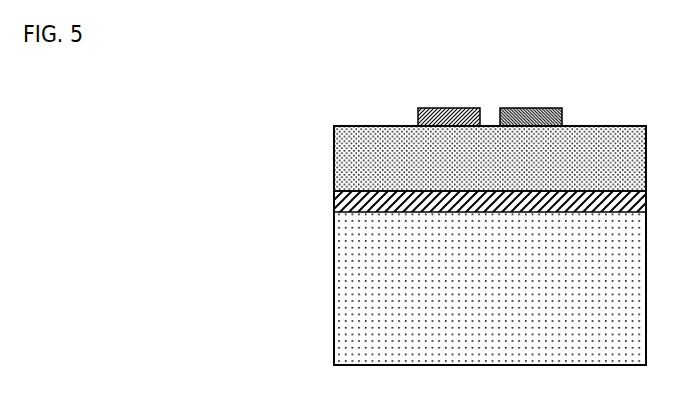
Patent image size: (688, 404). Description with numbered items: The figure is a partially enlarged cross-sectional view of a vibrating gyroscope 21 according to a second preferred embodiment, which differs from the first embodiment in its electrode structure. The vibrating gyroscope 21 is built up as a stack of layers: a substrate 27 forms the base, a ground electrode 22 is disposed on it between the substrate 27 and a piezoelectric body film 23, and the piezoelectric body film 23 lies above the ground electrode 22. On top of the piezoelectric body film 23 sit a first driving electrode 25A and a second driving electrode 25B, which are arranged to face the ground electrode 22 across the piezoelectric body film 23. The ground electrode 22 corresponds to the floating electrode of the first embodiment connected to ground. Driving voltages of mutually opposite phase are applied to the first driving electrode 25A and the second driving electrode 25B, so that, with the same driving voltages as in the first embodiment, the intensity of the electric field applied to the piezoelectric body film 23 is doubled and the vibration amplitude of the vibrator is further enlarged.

The vibrating gyroscope 21 is at (279, 100).
The ground electrode 22 is at (335, 201).
The piezoelectric body film 23 is at (343, 168).
The first driving electrode 25A is at (527, 108).
The second driving electrode 25B is at (419, 108).
The substrate 27 is at (341, 283).